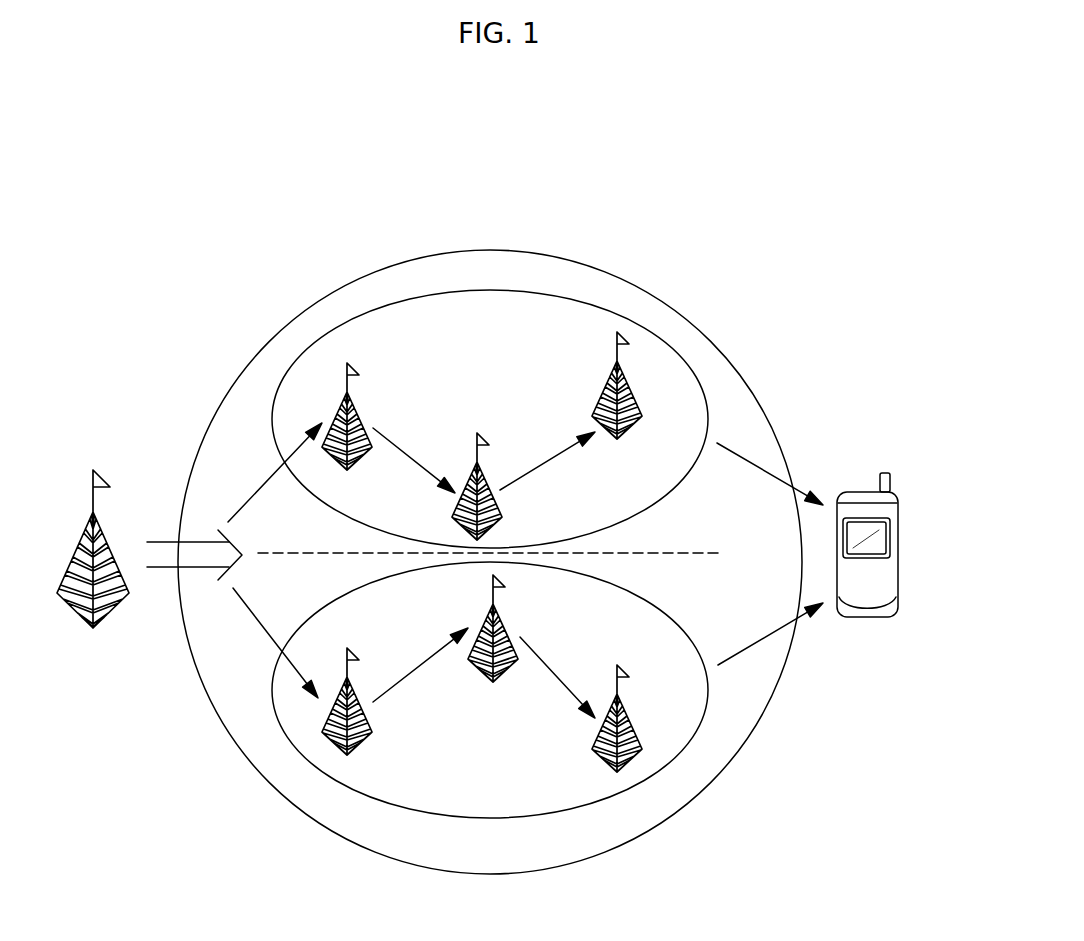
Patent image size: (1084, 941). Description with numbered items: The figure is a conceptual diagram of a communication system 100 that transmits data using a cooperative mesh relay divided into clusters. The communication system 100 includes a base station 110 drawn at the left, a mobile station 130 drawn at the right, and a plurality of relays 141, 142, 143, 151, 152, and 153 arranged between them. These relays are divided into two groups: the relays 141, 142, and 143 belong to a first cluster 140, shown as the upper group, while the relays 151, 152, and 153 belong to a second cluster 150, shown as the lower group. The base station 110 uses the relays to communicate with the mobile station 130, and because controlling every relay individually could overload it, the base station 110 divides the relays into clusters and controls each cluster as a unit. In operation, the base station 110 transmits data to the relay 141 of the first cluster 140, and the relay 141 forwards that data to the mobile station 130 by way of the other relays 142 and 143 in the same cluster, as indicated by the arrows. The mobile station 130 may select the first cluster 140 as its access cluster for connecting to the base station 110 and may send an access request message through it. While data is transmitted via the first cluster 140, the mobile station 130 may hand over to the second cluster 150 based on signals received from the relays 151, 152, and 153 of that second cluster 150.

The communication system 100 is at (509, 193).
The base station 110 is at (95, 628).
The mobile station 130 is at (898, 545).
The first cluster 140 is at (690, 370).
The relay 141 is at (337, 422).
The relay 142 is at (472, 478).
The relay 143 is at (632, 383).
The second cluster 150 is at (605, 798).
The relay 151 is at (362, 745).
The relay 152 is at (495, 682).
The relay 153 is at (638, 735).